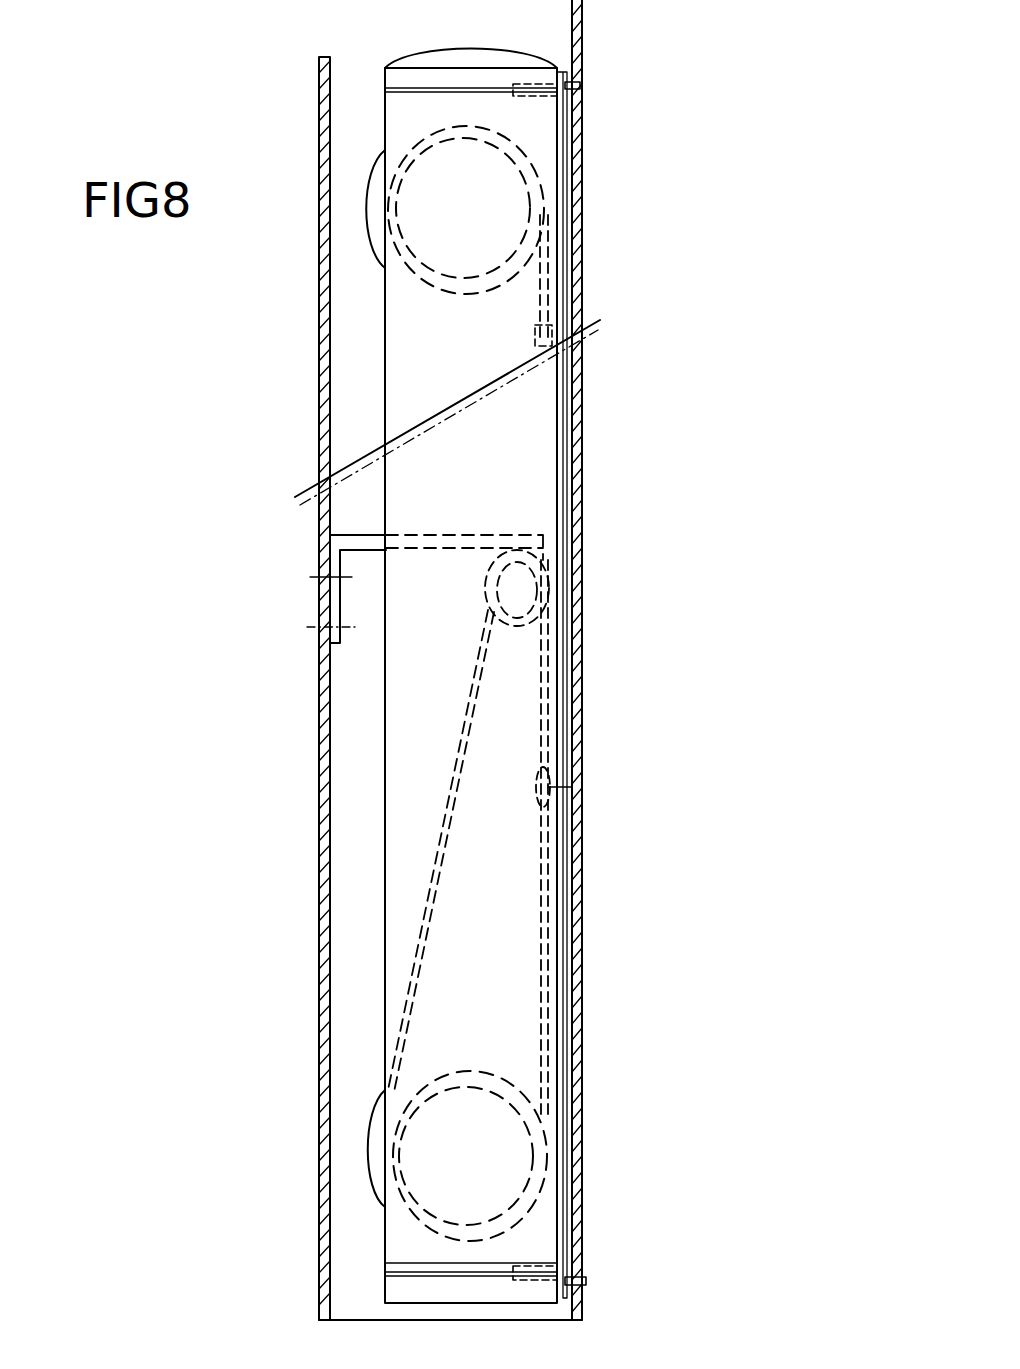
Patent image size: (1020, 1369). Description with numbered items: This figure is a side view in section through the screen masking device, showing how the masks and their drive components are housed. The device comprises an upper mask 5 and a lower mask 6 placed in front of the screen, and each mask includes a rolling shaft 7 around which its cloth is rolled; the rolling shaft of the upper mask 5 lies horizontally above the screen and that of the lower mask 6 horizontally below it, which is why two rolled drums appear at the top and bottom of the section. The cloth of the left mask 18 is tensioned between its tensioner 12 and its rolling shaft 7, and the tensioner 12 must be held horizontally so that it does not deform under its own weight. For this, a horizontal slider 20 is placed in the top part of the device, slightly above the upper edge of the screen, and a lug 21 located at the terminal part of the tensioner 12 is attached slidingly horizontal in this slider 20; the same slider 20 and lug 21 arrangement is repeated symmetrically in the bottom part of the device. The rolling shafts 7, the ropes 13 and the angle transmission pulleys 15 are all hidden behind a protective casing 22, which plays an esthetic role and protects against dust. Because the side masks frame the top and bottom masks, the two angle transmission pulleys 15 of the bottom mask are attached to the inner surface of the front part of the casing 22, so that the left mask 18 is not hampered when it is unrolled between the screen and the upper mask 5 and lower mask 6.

The upper mask 5 is at (545, 281).
The lower mask 6 is at (547, 938).
The rolling shaft 7 is at (404, 62).
The tensioner 12 is at (584, 350).
The rope 13 is at (546, 715).
The angle transmission pulley 15 is at (533, 97).
The left mask 18 is at (520, 498).
The horizontal slider 20 is at (578, 82).
The lug 21 is at (582, 86).
The protective casing 22 is at (322, 636).